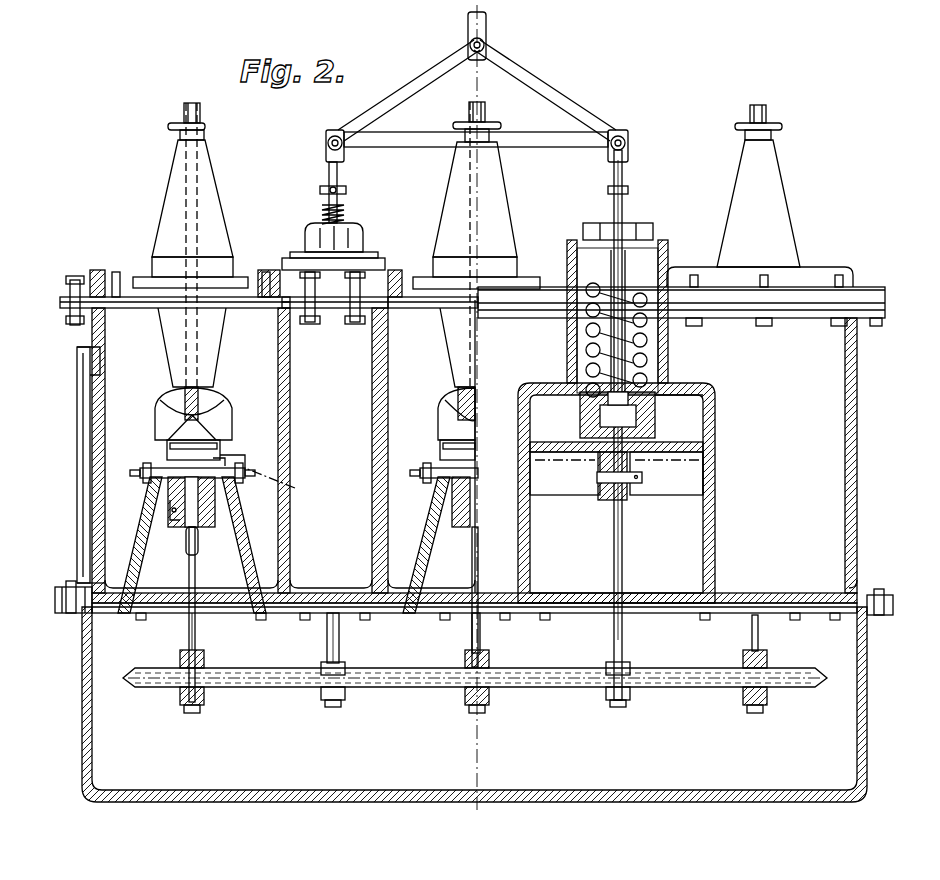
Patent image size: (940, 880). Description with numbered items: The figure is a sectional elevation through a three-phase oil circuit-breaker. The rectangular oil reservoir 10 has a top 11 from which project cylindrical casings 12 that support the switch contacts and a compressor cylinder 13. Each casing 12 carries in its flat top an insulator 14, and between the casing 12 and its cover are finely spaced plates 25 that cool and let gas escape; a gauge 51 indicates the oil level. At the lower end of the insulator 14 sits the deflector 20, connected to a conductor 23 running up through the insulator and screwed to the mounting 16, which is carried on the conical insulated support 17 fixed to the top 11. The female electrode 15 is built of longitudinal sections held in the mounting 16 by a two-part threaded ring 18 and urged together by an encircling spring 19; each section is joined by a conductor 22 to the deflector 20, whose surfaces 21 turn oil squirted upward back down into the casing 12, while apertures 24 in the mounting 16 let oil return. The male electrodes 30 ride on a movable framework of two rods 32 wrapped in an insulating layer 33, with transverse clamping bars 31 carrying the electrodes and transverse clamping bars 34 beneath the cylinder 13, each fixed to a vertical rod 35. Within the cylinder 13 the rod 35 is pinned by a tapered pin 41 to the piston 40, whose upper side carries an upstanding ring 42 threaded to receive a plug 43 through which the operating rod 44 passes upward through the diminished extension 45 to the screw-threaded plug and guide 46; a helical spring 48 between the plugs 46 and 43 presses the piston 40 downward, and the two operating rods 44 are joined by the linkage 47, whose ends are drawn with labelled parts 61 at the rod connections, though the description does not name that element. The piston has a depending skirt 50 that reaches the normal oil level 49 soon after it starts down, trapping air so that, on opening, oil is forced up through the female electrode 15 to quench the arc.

The oil reservoir 10 is at (258, 792).
The top 11 is at (62, 595).
The cylindrical casing 12 is at (92, 402).
The compressor cylinder 13 is at (716, 420).
The insulator 14 is at (214, 216).
The female electrode 15 is at (207, 522).
The mounting 16 is at (140, 472).
The conical insulated support 17 is at (135, 516).
The threaded ring 18 is at (170, 447).
The spring 19 is at (176, 516).
The deflector 20 is at (215, 402).
The deflecting surfaces 21 is at (160, 416).
The conductor 22 is at (222, 445).
The conductor 23 is at (185, 357).
The apertures 24 is at (248, 460).
The plates 25 is at (72, 308).
The male electrode 30 is at (188, 544).
The transverse clamping bars 31 is at (205, 672).
The rods 32 is at (258, 668).
The layer of insulating material 33 is at (299, 668).
The transverse clamping bars 34 is at (346, 690).
The vertical rod 35 is at (340, 636).
The piston 40 is at (704, 448).
The tapered pin 41 is at (603, 482).
The upstanding ring 42 is at (656, 420).
The threaded plug 43 is at (690, 396).
The operating rod 44 is at (626, 360).
The diminished extension 45 is at (669, 335).
The screw-threaded plug and guide 46 is at (650, 252).
The linkage 47 is at (550, 93).
The helical spring 48 is at (586, 347).
The normal oil level 49 is at (668, 480).
The depending skirt 50 is at (700, 490).
The gauge 51 is at (78, 433).
The operating rod 61 is at (346, 190).